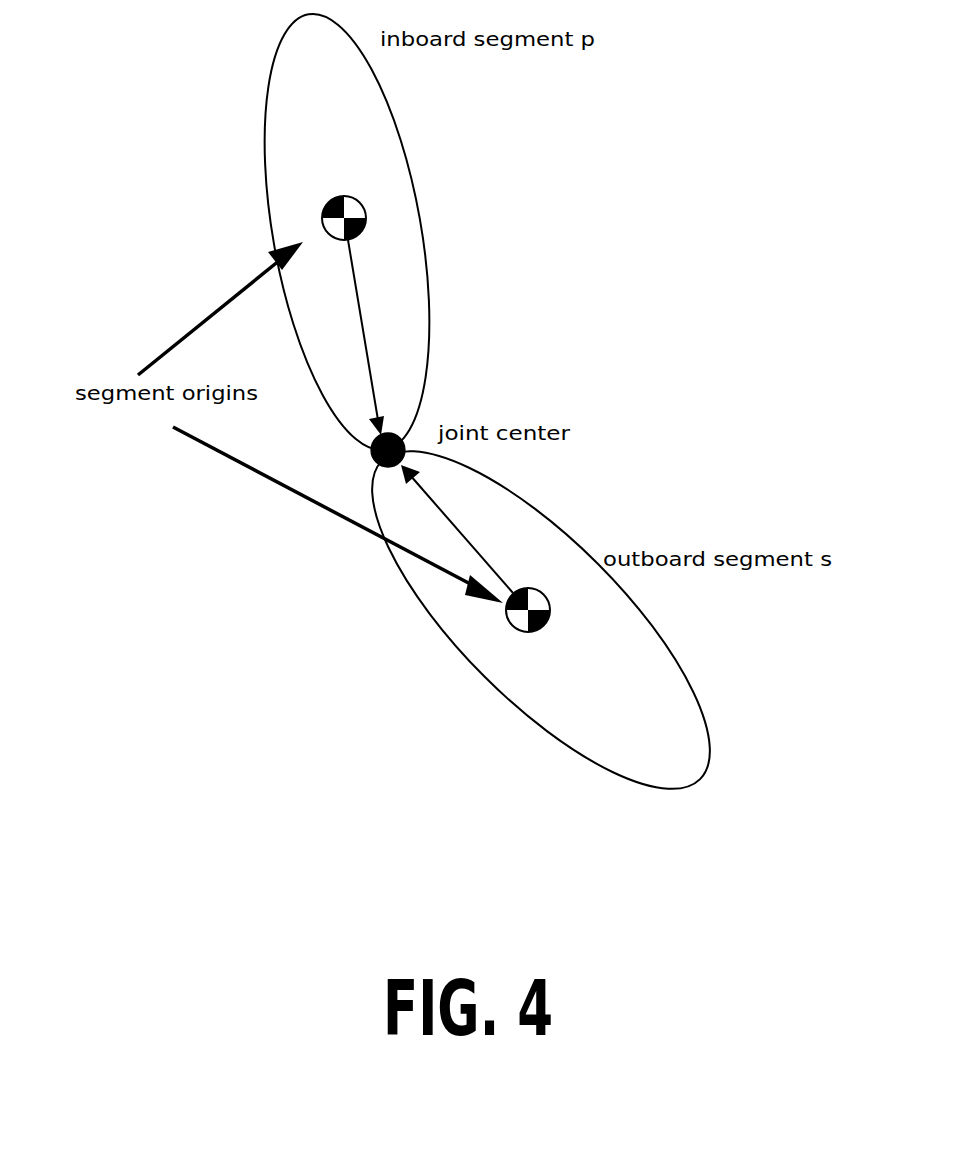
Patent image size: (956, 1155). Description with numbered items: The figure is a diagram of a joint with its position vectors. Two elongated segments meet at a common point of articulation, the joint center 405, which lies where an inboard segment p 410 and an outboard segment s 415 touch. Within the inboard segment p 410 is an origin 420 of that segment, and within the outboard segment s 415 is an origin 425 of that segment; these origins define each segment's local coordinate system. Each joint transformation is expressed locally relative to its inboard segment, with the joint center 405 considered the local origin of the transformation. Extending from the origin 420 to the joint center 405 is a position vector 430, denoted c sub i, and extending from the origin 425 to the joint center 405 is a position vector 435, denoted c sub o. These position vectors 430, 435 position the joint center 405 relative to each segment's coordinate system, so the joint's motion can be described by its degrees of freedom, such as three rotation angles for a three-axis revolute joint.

The joint center 405 is at (508, 444).
The inboard segment p 410 is at (368, 122).
The outboard segment s 415 is at (657, 687).
The origin of the inboard segment 420 is at (357, 217).
The origin of the outboard segment 425 is at (523, 631).
The position vector c_i 430 is at (363, 347).
The position vector c_o 435 is at (437, 510).